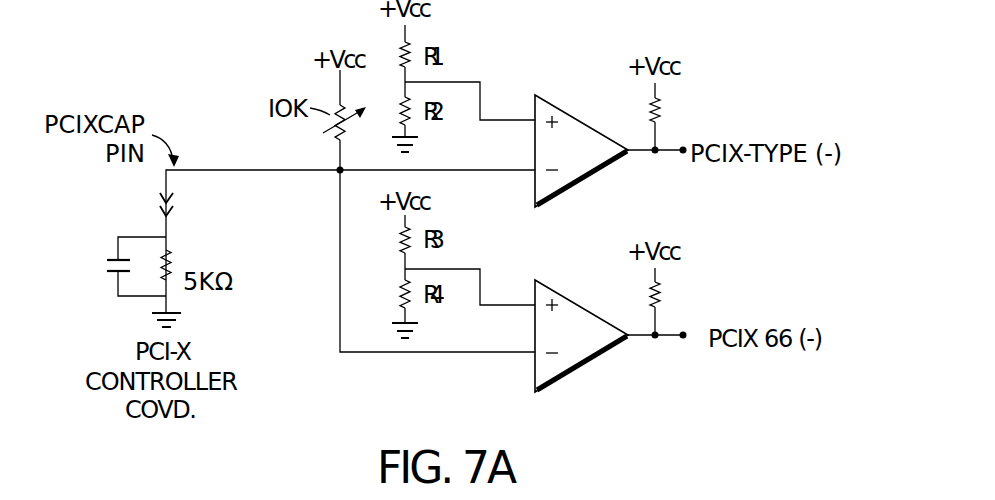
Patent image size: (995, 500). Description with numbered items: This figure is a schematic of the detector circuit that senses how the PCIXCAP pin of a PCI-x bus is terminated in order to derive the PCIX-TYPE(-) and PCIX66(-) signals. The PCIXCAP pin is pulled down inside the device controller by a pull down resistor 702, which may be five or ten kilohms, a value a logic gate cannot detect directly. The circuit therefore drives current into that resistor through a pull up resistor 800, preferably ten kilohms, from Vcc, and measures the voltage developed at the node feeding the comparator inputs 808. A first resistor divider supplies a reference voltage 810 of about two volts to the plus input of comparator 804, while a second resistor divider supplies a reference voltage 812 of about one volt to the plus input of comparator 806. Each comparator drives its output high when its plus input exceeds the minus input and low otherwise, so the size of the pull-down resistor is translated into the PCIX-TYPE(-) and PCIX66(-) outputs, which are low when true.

The pull up resistor 800 is at (272, 90).
The comparator inputs 808 is at (338, 174).
The pull down resistor 702 is at (170, 254).
The reference voltage 810 is at (480, 82).
The comparator 804 is at (566, 125).
The reference voltage 812 is at (480, 269).
The comparator 806 is at (566, 312).